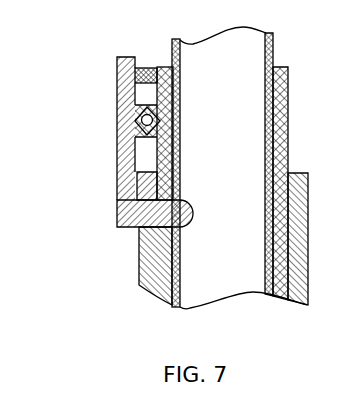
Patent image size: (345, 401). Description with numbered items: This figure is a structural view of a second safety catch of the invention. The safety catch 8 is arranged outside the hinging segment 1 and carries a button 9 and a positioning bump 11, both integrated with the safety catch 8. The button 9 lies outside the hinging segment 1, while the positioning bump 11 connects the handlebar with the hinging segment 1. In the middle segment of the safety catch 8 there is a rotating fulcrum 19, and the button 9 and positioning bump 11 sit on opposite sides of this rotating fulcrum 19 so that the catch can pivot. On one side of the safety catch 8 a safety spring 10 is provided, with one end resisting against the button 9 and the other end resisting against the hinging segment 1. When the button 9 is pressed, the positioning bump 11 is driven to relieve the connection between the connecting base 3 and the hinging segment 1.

The hinging segment 1 is at (139, 257).
The connecting base 3 is at (140, 286).
The safety catch 8 is at (117, 147).
The button 9 is at (117, 58).
The safety spring 10 is at (117, 75).
The positioning bump 11 is at (117, 193).
The rotating fulcrum 19 is at (117, 108).